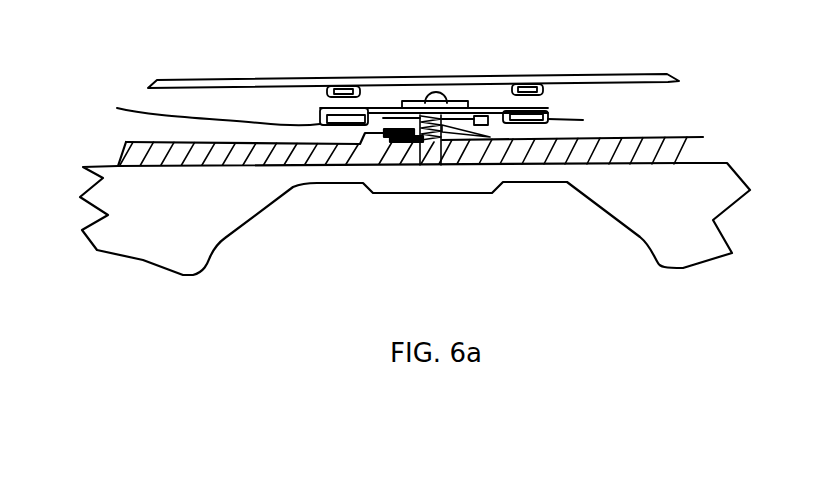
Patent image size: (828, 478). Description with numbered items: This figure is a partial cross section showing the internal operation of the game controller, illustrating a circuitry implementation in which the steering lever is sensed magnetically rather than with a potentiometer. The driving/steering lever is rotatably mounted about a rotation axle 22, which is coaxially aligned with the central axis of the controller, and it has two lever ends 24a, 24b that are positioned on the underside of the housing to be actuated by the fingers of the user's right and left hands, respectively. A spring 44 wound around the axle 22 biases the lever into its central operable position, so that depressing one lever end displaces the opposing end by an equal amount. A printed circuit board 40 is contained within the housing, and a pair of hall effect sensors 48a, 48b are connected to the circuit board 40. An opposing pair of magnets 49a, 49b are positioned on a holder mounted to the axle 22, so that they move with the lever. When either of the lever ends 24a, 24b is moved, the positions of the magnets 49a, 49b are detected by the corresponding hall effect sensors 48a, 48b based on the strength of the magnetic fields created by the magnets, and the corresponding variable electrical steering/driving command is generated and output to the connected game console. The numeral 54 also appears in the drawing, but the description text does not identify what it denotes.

The printed circuit board 40 is at (233, 84).
The hall effect sensor 48a is at (337, 85).
The hall effect sensor 48b is at (527, 83).
The dome contact 54 is at (385, 118).
The magnet 49a is at (187, 106).
The magnet 49b is at (583, 120).
The rotation axle 22 is at (421, 165).
The spring 44 is at (478, 132).
The lever end 24a is at (192, 230).
The lever end 24b is at (673, 252).